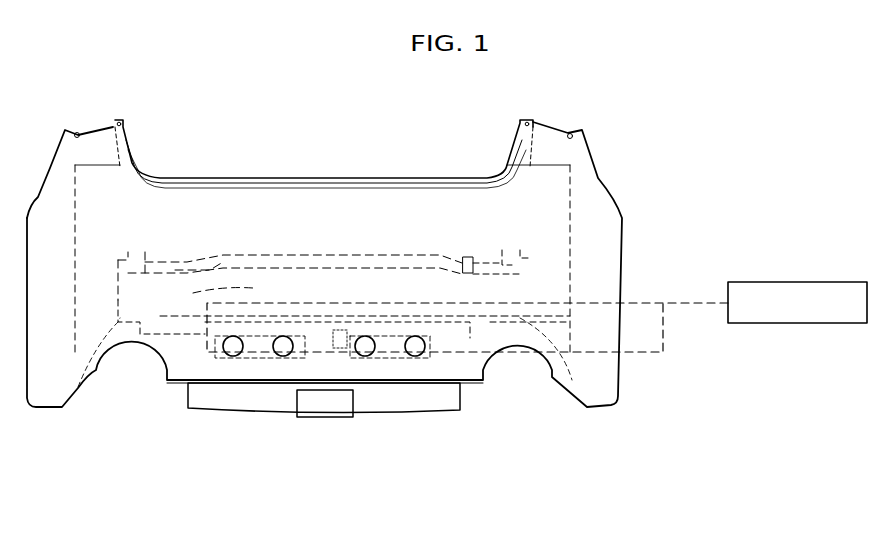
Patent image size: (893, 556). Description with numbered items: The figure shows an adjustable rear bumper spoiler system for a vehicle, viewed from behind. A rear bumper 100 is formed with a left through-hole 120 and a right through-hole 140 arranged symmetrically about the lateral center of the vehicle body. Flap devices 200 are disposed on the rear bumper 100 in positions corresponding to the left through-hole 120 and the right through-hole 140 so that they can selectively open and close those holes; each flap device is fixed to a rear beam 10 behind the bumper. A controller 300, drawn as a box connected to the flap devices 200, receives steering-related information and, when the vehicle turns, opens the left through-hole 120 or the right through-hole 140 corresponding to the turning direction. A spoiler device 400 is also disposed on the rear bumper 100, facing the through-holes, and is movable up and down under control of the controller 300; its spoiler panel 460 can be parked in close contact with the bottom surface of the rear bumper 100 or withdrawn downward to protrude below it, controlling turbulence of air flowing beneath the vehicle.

The rear beam 10 is at (240, 273).
The rear bumper 100 is at (477, 370).
The left through-hole 120 is at (233, 357).
The right through-hole 140 is at (415, 357).
The flap devices 200 is at (283, 357).
The controller 300 is at (783, 282).
The spoiler device 400 is at (340, 336).
The spoiler panel 460 is at (327, 404).